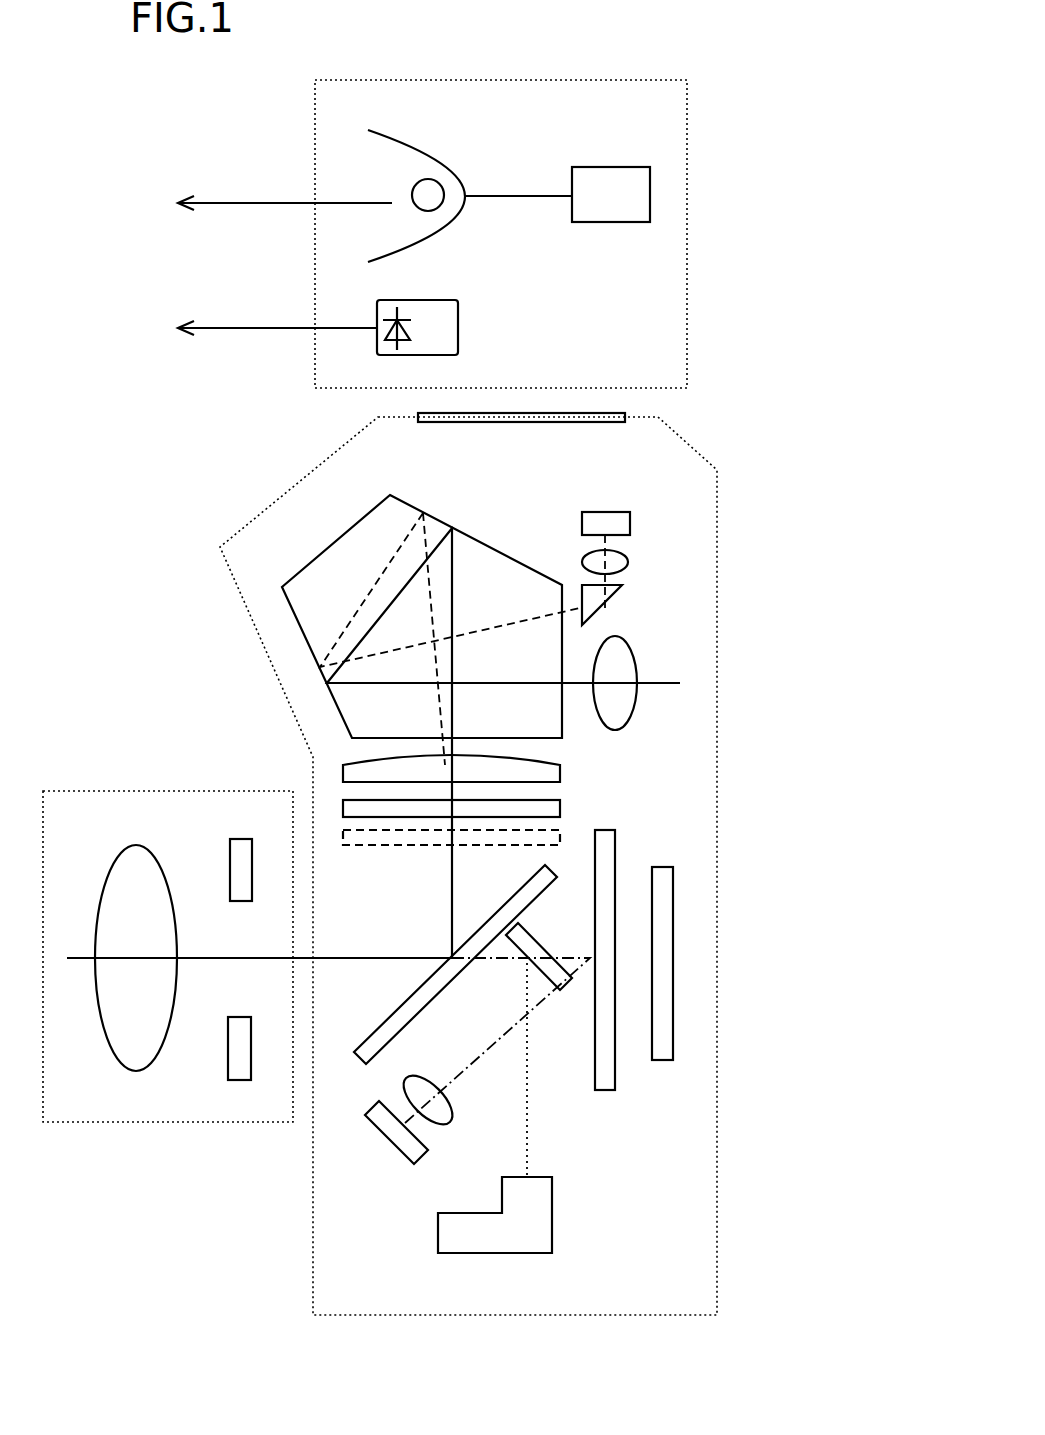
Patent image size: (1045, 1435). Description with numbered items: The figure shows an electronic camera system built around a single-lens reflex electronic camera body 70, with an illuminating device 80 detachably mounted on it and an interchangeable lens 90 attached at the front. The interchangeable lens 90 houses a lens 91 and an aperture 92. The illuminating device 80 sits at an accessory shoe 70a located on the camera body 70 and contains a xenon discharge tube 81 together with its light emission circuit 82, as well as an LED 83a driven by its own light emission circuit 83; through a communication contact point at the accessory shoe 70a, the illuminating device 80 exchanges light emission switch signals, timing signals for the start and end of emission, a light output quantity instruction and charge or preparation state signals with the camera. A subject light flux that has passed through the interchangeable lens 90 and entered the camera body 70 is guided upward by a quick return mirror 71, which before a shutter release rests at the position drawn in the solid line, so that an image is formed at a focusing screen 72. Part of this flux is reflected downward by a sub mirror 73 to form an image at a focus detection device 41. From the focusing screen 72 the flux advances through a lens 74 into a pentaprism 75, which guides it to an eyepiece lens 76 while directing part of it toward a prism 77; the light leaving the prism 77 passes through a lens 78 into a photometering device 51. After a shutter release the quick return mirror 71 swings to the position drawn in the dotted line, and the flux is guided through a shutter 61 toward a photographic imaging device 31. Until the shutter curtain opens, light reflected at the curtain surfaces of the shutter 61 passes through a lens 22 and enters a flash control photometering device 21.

The flash control photometering device 21 is at (393, 1132).
The lens 22 is at (442, 1117).
The photographic imaging device 31 is at (663, 1053).
The focus detection device 41 is at (517, 1242).
The photometering device 51 is at (608, 515).
The shutter 61 is at (604, 1083).
The camera body 70 is at (737, 823).
The accessory shoe 70a is at (625, 413).
The quick return mirror 71 is at (362, 837).
The focusing screen 72 is at (552, 808).
The sub mirror 73 is at (527, 933).
The lens 74 is at (552, 773).
The pentaprism 75 is at (502, 558).
The eyepiece lens 76 is at (625, 720).
The prism 77 is at (622, 590).
The lens 78 is at (623, 560).
The illuminating device 80 is at (709, 159).
The xenon discharge tube 81 is at (432, 180).
The light emission circuit 82 is at (610, 173).
The light emission circuit 83 is at (445, 345).
The LED 83a is at (390, 343).
The interchangeable lens 90 is at (178, 1145).
The lens 91 is at (132, 852).
The aperture 92 is at (234, 1024).